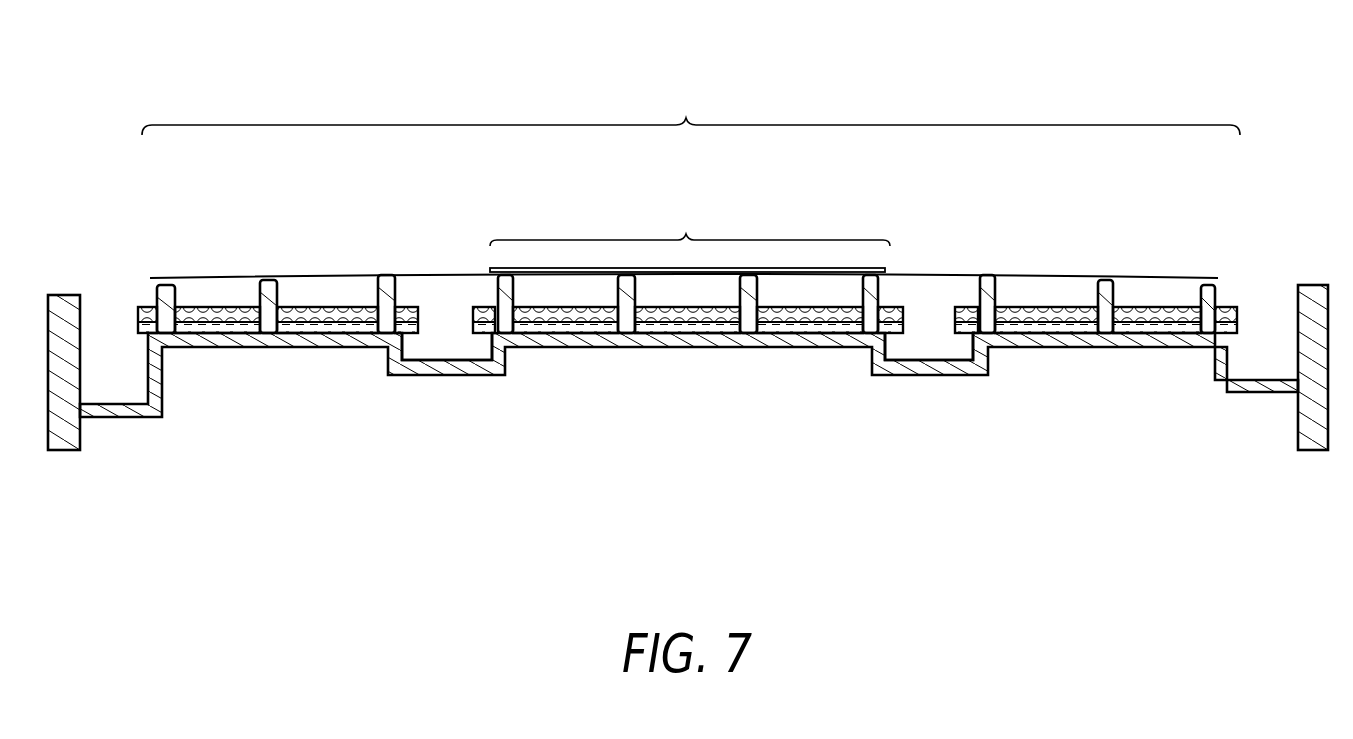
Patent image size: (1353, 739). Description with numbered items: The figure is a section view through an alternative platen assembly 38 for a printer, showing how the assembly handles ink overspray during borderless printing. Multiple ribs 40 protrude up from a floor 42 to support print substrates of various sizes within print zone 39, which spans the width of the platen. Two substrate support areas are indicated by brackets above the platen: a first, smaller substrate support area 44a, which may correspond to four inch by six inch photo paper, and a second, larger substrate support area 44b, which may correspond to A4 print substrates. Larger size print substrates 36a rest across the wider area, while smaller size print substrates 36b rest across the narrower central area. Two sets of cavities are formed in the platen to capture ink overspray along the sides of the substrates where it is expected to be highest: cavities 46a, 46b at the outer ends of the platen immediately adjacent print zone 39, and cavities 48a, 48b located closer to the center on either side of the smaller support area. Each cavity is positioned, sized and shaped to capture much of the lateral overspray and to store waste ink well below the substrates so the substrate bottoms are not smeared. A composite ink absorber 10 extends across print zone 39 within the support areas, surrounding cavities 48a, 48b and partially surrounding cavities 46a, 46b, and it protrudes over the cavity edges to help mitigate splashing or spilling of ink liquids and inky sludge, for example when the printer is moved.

The composite ink absorber 10 is at (797, 340).
The larger size print substrate 36a is at (218, 277).
The smaller size print substrate 36b is at (517, 265).
The platen assembly 38 is at (210, 415).
The print zone 39 is at (132, 203).
The ribs 40 is at (1217, 282).
The floor 42 is at (666, 342).
The first substrate support area 44a is at (686, 236).
The second substrate support area 44b is at (686, 120).
The cavity 46a is at (101, 310).
The cavity 46b is at (1272, 312).
The cavity 48a is at (440, 318).
The cavity 48b is at (933, 318).